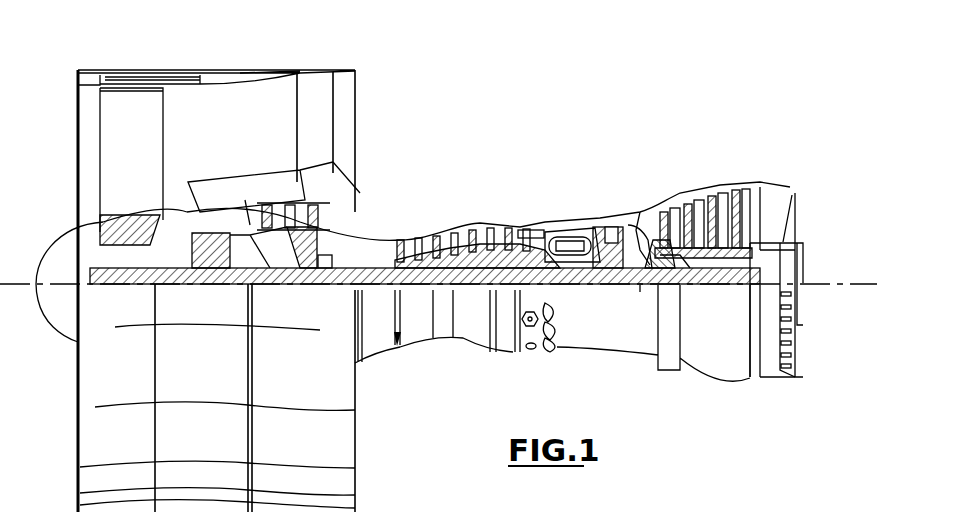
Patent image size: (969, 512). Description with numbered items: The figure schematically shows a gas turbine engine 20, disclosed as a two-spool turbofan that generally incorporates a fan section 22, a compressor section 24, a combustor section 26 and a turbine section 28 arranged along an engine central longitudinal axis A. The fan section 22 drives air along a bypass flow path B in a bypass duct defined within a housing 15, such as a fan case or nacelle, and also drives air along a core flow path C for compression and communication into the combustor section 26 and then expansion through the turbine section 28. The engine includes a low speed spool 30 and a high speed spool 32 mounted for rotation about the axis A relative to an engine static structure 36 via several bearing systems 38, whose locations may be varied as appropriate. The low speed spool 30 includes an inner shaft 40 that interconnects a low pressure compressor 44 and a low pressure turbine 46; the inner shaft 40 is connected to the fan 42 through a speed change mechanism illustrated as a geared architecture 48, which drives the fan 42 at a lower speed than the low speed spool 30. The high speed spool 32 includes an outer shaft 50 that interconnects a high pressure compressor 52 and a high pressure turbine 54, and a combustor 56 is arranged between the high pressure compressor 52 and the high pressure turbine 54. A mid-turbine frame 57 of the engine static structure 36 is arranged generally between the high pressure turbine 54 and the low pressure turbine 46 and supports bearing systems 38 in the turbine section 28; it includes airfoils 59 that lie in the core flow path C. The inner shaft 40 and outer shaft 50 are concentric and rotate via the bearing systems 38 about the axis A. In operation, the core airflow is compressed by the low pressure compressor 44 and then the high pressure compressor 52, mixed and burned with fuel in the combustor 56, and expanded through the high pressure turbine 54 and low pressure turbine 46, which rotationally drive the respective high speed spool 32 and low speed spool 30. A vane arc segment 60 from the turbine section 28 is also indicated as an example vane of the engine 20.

The housing 15 is at (215, 74).
The gas turbine engine 20 is at (568, 98).
The fan section 22 is at (163, 60).
The compressor section 24 is at (393, 212).
The combustor section 26 is at (560, 203).
The turbine section 28 is at (690, 165).
The low speed spool 30 is at (473, 296).
The high speed spool 32 is at (507, 235).
The engine static structure 36 is at (506, 352).
The bearing systems 38 is at (328, 288).
The inner shaft 40 is at (373, 352).
The fan 42 is at (152, 169).
The low pressure compressor 44 is at (305, 195).
The low pressure turbine 46 is at (705, 192).
The geared architecture 48 is at (220, 285).
The outer shaft 50 is at (573, 286).
The high pressure compressor 52 is at (458, 235).
The high pressure turbine 54 is at (608, 226).
The combustor 56 is at (566, 238).
The mid-turbine frame 57 is at (648, 213).
The airfoils 59 is at (668, 258).
The vane arc segment 60 is at (650, 222).
The engine central longitudinal axis A is at (852, 284).
The bypass flow path B is at (185, 127).
The core flow path C is at (212, 201).